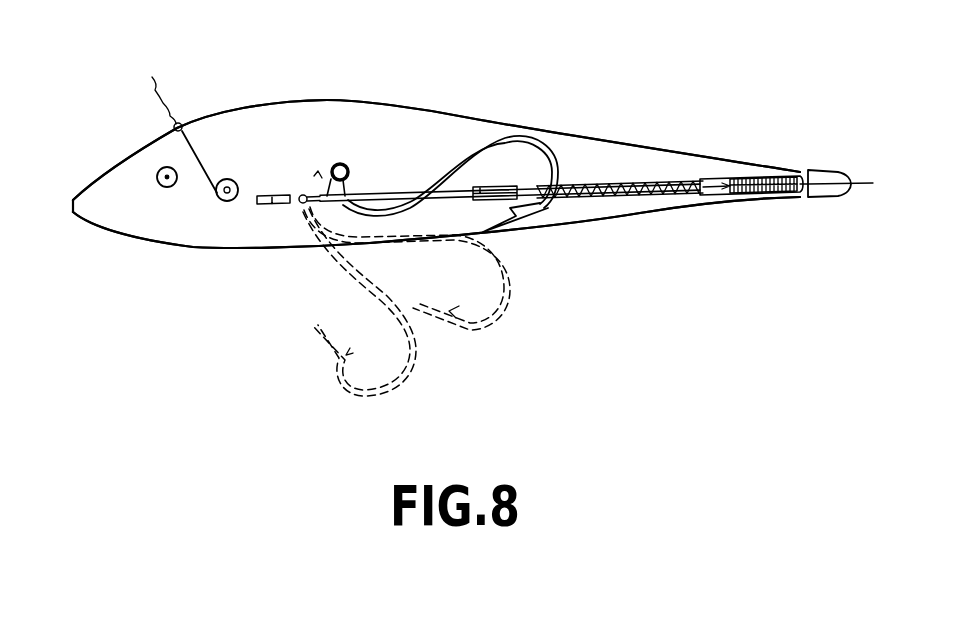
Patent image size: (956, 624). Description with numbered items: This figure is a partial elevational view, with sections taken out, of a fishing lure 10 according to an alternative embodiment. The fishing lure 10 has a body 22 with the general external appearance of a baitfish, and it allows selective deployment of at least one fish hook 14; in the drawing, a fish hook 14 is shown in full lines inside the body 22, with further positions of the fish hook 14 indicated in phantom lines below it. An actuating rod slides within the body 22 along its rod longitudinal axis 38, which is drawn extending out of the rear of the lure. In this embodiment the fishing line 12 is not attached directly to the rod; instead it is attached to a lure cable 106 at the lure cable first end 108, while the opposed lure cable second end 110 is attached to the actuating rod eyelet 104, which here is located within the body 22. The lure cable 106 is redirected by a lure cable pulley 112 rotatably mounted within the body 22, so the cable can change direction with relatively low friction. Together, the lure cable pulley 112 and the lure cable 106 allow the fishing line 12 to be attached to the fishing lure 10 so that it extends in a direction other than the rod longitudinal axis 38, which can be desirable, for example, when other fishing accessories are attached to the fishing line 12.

The fishing lure 10 is at (500, 48).
The body 22 is at (443, 103).
The rod longitudinal axis 38 is at (860, 177).
The fish hook 14 is at (521, 137).
The lure cable second end 110 is at (292, 170).
The actuating rod eyelet 104 is at (300, 201).
The lure cable pulley 112 is at (217, 203).
The lure cable 106 is at (203, 167).
The lure cable first end 108 is at (191, 125).
The fishing line 12 is at (152, 77).